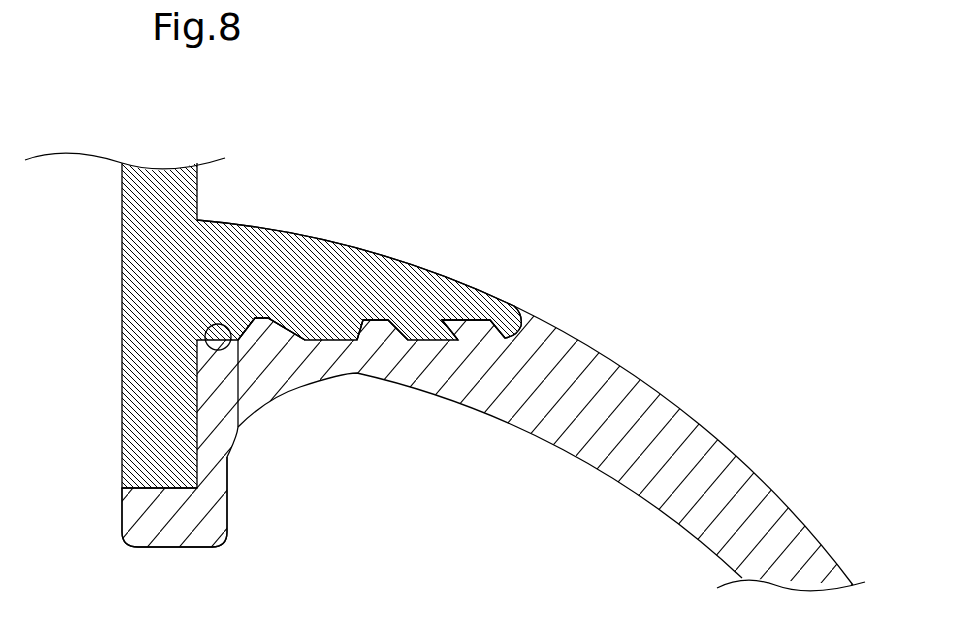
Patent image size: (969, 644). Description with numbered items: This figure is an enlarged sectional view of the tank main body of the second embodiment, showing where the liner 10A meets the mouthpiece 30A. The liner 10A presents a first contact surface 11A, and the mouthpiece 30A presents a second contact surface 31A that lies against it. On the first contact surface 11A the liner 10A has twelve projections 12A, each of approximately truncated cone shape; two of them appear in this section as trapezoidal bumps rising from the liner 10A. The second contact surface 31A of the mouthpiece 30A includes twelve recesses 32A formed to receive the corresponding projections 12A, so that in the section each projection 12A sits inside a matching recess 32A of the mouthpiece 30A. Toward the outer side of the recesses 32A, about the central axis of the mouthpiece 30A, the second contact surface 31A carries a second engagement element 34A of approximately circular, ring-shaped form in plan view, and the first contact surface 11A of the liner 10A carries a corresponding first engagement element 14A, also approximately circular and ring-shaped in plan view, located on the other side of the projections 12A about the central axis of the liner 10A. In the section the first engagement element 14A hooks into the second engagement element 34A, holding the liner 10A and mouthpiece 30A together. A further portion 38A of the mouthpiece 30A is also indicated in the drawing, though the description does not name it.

The liner 10A is at (680, 383).
The first contact surface 11A is at (237, 428).
The projection 12A is at (273, 330).
The first engagement element 14A is at (475, 330).
The mouthpiece 30A is at (336, 167).
The second contact surface 31A is at (212, 325).
The recess 32A is at (262, 318).
The second engagement element 34A is at (458, 287).
The base portion of molding 38A is at (310, 250).